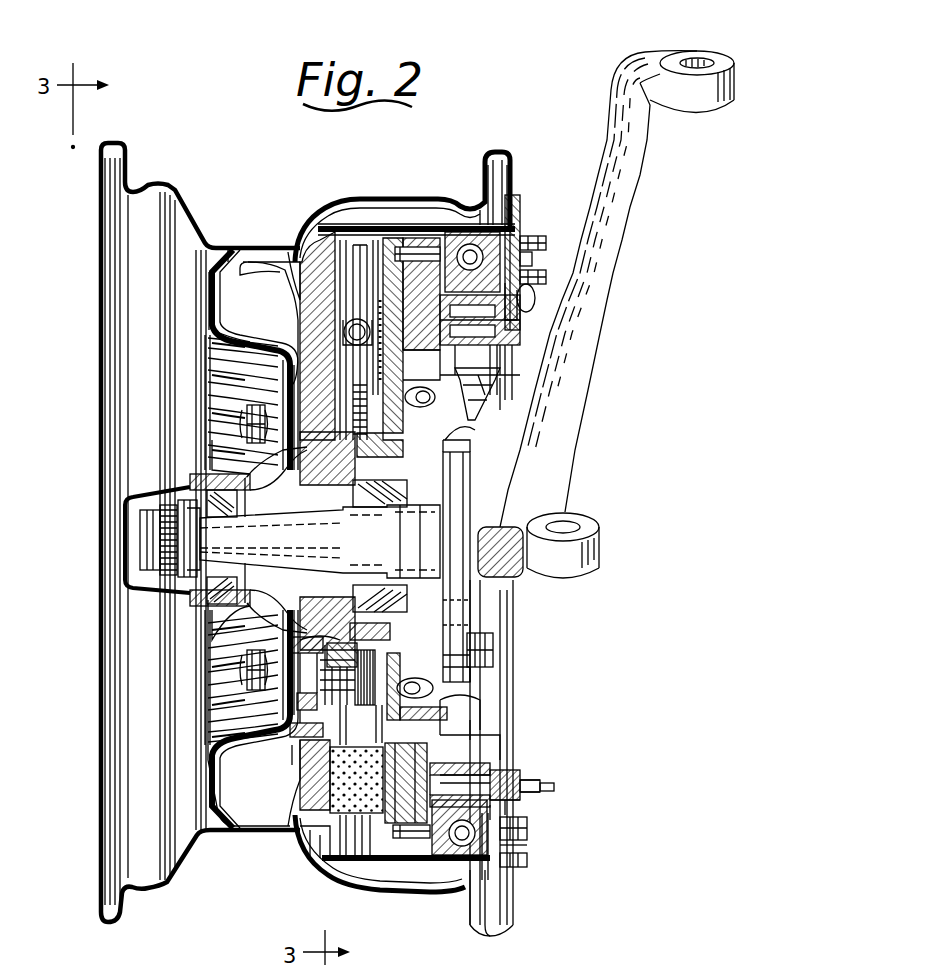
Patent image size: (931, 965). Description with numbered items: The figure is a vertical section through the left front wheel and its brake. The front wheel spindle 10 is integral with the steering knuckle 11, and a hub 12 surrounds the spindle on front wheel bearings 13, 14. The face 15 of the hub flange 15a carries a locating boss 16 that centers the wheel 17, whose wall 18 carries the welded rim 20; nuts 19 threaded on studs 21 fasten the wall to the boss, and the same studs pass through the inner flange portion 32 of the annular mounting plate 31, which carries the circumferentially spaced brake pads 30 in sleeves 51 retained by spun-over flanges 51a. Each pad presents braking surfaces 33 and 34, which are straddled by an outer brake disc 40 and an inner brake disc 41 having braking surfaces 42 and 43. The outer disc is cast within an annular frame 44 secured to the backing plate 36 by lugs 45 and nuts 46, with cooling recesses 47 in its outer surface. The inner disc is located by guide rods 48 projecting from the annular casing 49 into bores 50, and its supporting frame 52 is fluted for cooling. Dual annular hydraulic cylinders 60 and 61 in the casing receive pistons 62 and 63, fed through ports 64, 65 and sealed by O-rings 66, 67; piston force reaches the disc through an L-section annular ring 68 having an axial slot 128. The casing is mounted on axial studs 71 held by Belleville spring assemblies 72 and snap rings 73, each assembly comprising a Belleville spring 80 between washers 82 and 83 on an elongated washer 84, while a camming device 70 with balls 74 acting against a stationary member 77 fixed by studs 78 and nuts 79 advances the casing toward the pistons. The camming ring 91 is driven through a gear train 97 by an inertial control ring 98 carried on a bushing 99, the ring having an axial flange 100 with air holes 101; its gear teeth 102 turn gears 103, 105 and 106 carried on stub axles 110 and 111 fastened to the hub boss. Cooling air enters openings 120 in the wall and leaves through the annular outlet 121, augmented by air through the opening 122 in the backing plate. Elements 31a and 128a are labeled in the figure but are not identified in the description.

The front wheel spindle 10 is at (468, 130).
The steering knuckle 11 is at (563, 463).
The hub 12 is at (185, 632).
The front wheel bearing 13 is at (250, 583).
The front wheel bearing 14 is at (347, 595).
The face of hub flange 15 is at (233, 400).
The hub flange 15a is at (207, 379).
The locating boss 16 is at (315, 460).
The wheel 17 is at (182, 304).
The wall 18 is at (207, 327).
The nuts 19 is at (217, 453).
The rim 20 is at (168, 190).
The studs 21 is at (227, 424).
The brake pads 30 is at (292, 850).
The annular mounting plate 31 is at (290, 745).
The caliper block 31a is at (416, 765).
The inner flange portion 32 is at (203, 710).
The rotational braking surface 33 is at (283, 783).
The rotational braking surface 34 is at (385, 865).
The backing plate 36 is at (517, 620).
The outer brake disc 40 is at (300, 250).
The inner brake disc 41 is at (408, 233).
The braking surface 42 is at (337, 228).
The braking surface 43 is at (380, 258).
The annular frame 44 is at (295, 296).
The integral lugs 45 is at (508, 208).
The nuts 46 is at (520, 214).
The recesses 47 is at (295, 316).
The guide rods 48 is at (447, 249).
The annular casing 49 is at (527, 848).
The cylindrical bores 50 is at (395, 258).
The sleeves 51 is at (310, 856).
The retaining flanges 51a is at (290, 858).
The supporting frame 52 is at (435, 232).
The annular hydraulic cylinder 60 is at (467, 763).
The annular hydraulic cylinder 61 is at (507, 370).
The annular hydraulic piston 62 is at (475, 354).
The annular hydraulic piston 63 is at (420, 397).
The port 64 is at (530, 268).
The port 65 is at (522, 298).
The O-ring 66 is at (532, 250).
The O-ring 67 is at (517, 387).
The annular ring 68 is at (473, 717).
The camming device 70 is at (465, 860).
The axial studs 71 is at (538, 783).
The Belleville spring assembly 72 is at (545, 789).
The snap ring 73 is at (542, 795).
The balls 74 is at (528, 236).
The stationary member 77 is at (487, 870).
The studs 78 is at (527, 862).
The nuts 79 is at (527, 857).
The Belleville spring 80 is at (542, 800).
The washer 82 is at (532, 773).
The washer 83 is at (517, 757).
The elongated washer 84 is at (507, 810).
The camming ring 91 is at (320, 862).
The gear train 97 is at (320, 598).
The inertial control ring 98 is at (490, 398).
The bushing 99 is at (343, 483).
The axial flange 100 is at (483, 693).
The holes 101 is at (473, 450).
The gear teeth 102 is at (457, 612).
The gear 103 is at (456, 658).
The gear 105 is at (290, 765).
The gear 106 is at (360, 684).
The stub axle 110 is at (433, 688).
The stub axle 111 is at (303, 630).
The openings 120 is at (207, 373).
The annular outlet 121 is at (514, 160).
The opening 122 is at (472, 430).
The axial slot 128 is at (466, 397).
The link portion 128a is at (490, 414).